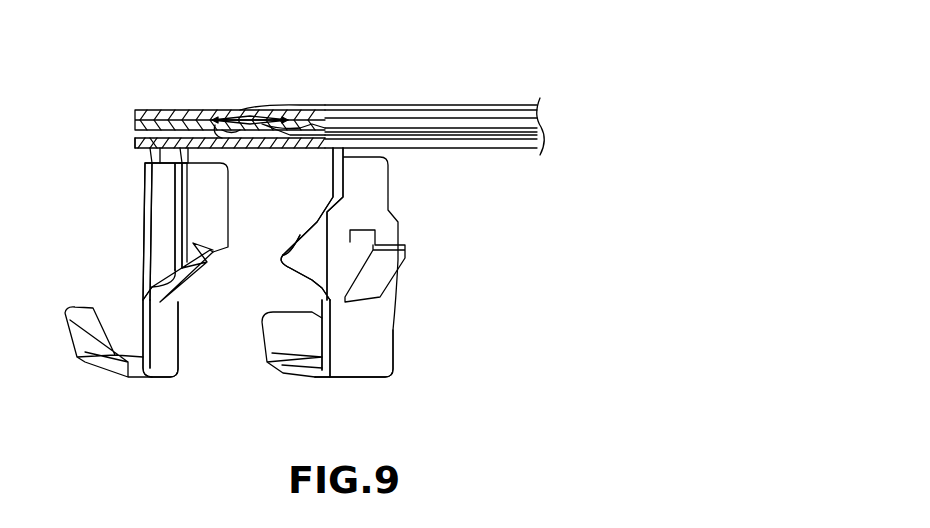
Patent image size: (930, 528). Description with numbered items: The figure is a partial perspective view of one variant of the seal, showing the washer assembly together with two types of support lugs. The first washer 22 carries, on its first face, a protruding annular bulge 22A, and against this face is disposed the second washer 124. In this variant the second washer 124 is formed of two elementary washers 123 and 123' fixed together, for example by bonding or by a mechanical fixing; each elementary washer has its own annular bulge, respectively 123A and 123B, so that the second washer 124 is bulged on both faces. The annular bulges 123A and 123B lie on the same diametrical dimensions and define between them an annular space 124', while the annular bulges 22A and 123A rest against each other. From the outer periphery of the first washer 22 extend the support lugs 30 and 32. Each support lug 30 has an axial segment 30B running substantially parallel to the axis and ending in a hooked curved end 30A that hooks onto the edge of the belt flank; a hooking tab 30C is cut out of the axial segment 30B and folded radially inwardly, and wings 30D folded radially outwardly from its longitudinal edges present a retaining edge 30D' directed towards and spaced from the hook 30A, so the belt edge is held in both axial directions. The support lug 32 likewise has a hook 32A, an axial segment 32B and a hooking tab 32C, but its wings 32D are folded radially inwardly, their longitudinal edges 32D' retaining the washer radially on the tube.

The first washer 22 is at (476, 148).
The annular bulge 22A is at (318, 115).
The second washer 124 is at (185, 108).
The annular space 124' is at (293, 99).
The elementary washer 123 is at (90, 141).
The elementary washer 123' is at (163, 106).
The annular bulge 123A is at (222, 120).
The annular bulge 123B is at (254, 108).
The support lug 32 is at (160, 397).
The hook 32A is at (103, 377).
The axial segment 32B is at (168, 322).
The hooking tab 32C is at (187, 284).
The wing 32D is at (123, 231).
The longitudinal edge 32D' is at (241, 208).
The support lug 30 is at (384, 392).
The hook 30A is at (289, 380).
The axial segment 30B is at (377, 333).
The hooking tab 30C is at (390, 268).
The wing 30D is at (307, 224).
The retaining edge 30D' is at (277, 270).